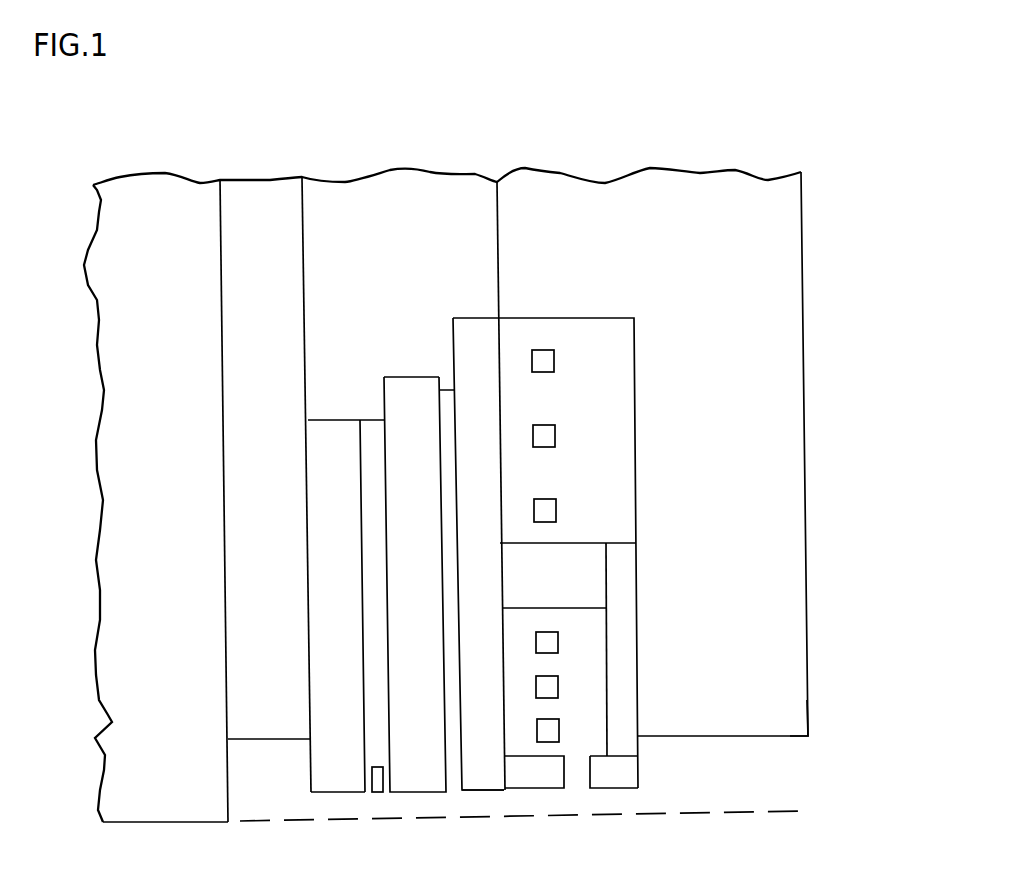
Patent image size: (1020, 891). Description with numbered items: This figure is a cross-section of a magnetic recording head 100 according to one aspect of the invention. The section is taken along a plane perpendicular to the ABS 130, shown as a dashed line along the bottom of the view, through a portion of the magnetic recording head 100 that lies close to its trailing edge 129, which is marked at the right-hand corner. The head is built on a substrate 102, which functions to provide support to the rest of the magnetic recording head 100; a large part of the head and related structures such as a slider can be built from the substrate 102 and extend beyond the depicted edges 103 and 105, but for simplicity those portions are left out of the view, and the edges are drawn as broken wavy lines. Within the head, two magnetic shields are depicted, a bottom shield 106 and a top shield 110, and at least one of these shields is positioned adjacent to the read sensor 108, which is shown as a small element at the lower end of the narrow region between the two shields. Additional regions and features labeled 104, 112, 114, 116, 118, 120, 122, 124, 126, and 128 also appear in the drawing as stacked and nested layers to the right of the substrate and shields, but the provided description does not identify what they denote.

The magnetic recording head 100 is at (720, 127).
The substrate 102 is at (191, 501).
The edge 103 is at (138, 658).
The isolation region 104 is at (269, 485).
The edge 105 is at (447, 146).
The bottom shield 106 is at (346, 606).
The read sensor 108 is at (379, 792).
The top shield 110 is at (419, 584).
The bottom boundary 112 is at (454, 783).
The drift region 114 is at (478, 554).
The epitaxial layer 116 is at (438, 486).
The body region 118 is at (545, 553).
The contact plugs 120 is at (547, 436).
The sidewall region 122 is at (627, 720).
The gate region 124 is at (568, 575).
The buried regions 126 is at (575, 775).
The right region 128 is at (723, 454).
The trailing edge 129 is at (812, 731).
The ABS 130 is at (757, 809).